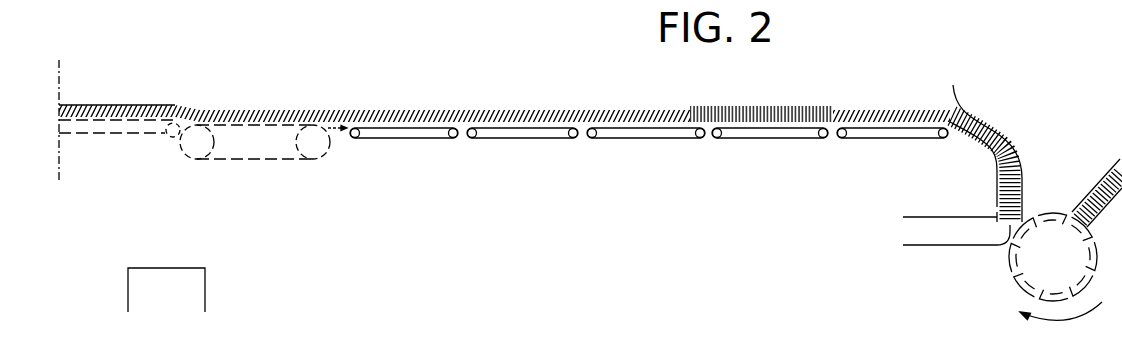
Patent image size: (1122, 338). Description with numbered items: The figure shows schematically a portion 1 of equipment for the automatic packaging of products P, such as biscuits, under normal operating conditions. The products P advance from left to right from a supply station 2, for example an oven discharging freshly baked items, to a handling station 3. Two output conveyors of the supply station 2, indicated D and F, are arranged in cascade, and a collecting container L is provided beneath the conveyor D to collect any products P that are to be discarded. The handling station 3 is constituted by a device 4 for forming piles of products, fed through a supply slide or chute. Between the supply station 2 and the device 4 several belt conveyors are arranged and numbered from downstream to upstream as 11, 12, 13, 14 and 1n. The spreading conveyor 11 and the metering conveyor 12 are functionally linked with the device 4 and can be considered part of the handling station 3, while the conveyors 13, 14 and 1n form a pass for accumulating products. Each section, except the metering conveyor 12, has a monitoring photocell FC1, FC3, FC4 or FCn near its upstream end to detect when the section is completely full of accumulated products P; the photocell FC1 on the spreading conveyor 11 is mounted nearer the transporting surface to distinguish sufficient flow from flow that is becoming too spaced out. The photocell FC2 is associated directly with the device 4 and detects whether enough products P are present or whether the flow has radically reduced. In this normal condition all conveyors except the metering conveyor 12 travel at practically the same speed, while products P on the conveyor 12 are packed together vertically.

The portion of equipment 1 is at (649, 185).
The belt conveyor 1n is at (403, 133).
The supply station 2 is at (267, 102).
The handling station 3 is at (931, 92).
The device for forming piles of products 4 is at (995, 108).
The spreading conveyor 11 is at (889, 139).
The metering conveyor 12 is at (776, 139).
The belt conveyor 13 is at (647, 139).
The belt conveyor 14 is at (525, 133).
The products P is at (205, 102).
The output conveyor D is at (107, 135).
The output conveyor F is at (240, 160).
The collecting container L is at (205, 299).
The monitoring photocell FCn is at (371, 101).
The monitoring photocell FC4 is at (483, 101).
The monitoring photocell FC3 is at (604, 101).
The photocell FC2 is at (1025, 173).
The monitoring photocell FC1 is at (864, 101).